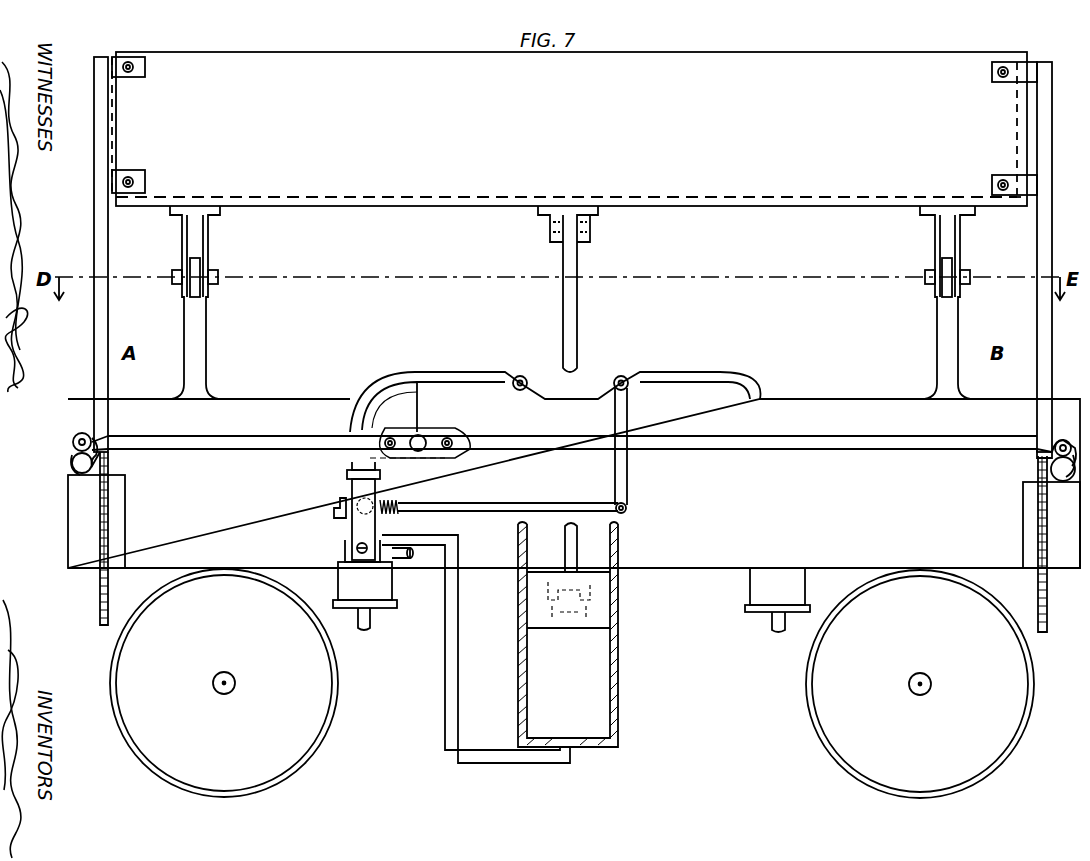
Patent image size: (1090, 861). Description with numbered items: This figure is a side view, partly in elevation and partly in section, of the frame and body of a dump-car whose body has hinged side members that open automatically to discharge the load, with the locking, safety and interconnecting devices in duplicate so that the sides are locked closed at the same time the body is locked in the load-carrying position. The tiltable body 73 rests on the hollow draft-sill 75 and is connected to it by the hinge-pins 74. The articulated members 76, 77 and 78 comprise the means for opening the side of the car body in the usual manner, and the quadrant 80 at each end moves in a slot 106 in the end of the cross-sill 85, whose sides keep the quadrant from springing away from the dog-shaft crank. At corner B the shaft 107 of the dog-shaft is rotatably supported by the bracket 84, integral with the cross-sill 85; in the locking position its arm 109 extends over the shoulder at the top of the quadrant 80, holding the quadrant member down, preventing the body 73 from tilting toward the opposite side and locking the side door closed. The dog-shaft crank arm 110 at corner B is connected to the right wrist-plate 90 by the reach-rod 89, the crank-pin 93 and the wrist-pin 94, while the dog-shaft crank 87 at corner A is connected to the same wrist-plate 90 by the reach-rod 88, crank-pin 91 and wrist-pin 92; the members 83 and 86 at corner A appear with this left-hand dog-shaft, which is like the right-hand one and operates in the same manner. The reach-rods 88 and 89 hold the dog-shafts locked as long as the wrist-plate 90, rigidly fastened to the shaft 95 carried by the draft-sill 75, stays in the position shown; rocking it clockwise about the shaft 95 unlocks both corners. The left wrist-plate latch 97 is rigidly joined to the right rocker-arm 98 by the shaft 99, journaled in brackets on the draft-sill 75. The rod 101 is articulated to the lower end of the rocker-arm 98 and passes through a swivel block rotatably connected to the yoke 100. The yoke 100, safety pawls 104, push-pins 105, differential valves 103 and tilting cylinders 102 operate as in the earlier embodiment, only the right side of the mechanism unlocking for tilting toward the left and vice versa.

The tiltable body 73 is at (569, 129).
The hinge-pins 74 is at (218, 278).
The hollow draft-sill 75 is at (574, 483).
The articulated member 76 is at (144, 67).
The articulated member 77 is at (145, 182).
The articulated member 78 is at (103, 328).
The quadrant 80 is at (100, 608).
The pulley 83 is at (74, 463).
The bracket 84 is at (74, 470).
The cross-sill 85 is at (88, 515).
The cable attachment 86 is at (98, 450).
The dog-shaft crank 87 is at (76, 444).
The reach-rod 88 is at (246, 440).
The reach-rod 89 is at (808, 440).
The right wrist-plate 90 is at (778, 372).
The crank-pin 91 is at (76, 435).
The wrist-pin 92 is at (452, 448).
The crank-pin 93 is at (1060, 600).
The wrist-pin 94 is at (390, 450).
The shaft 95 is at (420, 448).
The left wrist-plate latch 97 is at (428, 380).
The right rocker-arm 98 is at (630, 470).
The shaft 99 is at (519, 375).
The yoke 100 is at (350, 488).
The rod 101 is at (470, 513).
The tilting cylinder 102 is at (500, 642).
The differential valve 103 is at (385, 600).
The safety pawl 104 is at (333, 512).
The push-pin 105 is at (346, 473).
The slot 106 is at (94, 546).
The dog-shaft 107 is at (1058, 478).
The dog-shaft crank arm 109 is at (1040, 456).
The dog-shaft crank arm 110 is at (1055, 445).